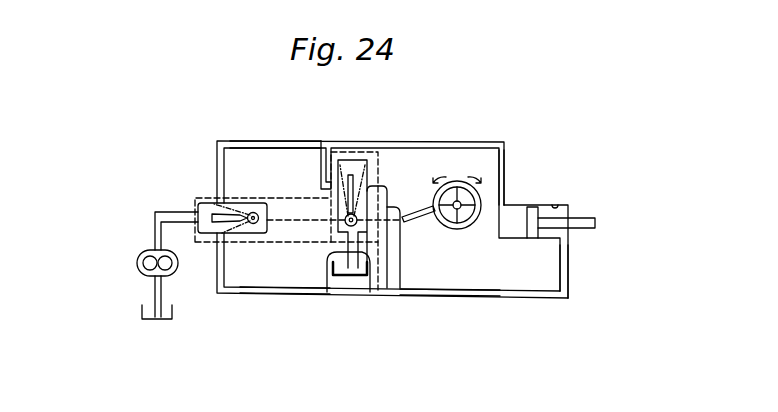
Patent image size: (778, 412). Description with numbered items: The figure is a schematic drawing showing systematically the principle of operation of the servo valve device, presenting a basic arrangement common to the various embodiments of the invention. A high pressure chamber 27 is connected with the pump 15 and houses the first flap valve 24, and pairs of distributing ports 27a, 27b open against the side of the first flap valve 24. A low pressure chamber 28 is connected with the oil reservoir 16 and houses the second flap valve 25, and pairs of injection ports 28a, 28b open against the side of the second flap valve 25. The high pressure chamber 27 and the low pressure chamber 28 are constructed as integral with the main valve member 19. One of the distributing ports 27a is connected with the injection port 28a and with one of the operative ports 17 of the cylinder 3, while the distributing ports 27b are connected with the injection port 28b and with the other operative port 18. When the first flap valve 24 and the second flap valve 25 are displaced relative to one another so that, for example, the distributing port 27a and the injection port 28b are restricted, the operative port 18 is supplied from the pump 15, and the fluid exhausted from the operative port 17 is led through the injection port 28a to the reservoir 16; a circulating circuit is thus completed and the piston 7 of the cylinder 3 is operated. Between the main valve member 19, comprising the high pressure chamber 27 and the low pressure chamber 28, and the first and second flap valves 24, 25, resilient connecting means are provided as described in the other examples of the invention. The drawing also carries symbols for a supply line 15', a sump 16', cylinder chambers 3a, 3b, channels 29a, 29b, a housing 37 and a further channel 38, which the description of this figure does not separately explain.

The cylinder 3 is at (556, 208).
The cylinder chamber 3a is at (500, 233).
The cylinder chamber 3b is at (553, 236).
The piston 7 is at (533, 217).
The pump 15 is at (177, 302).
The pressure line 15' is at (155, 206).
The oil reservoir 16 is at (239, 298).
The return sump 16' is at (363, 316).
The operative port 17 is at (504, 203).
The operative port 18 is at (563, 250).
The main valve member 19 is at (282, 241).
The first flap valve 24 is at (199, 205).
The second flap valve 25 is at (352, 175).
The high pressure chamber 27 is at (253, 206).
The distributing port 27a is at (219, 200).
The distributing port 27b is at (225, 237).
The low pressure chamber 28 is at (396, 216).
The injection port 28a is at (322, 186).
The injection port 28b is at (374, 185).
The channel 29a is at (281, 141).
The channel 29b is at (297, 290).
The housing 37 is at (428, 141).
The channel 38 is at (470, 291).